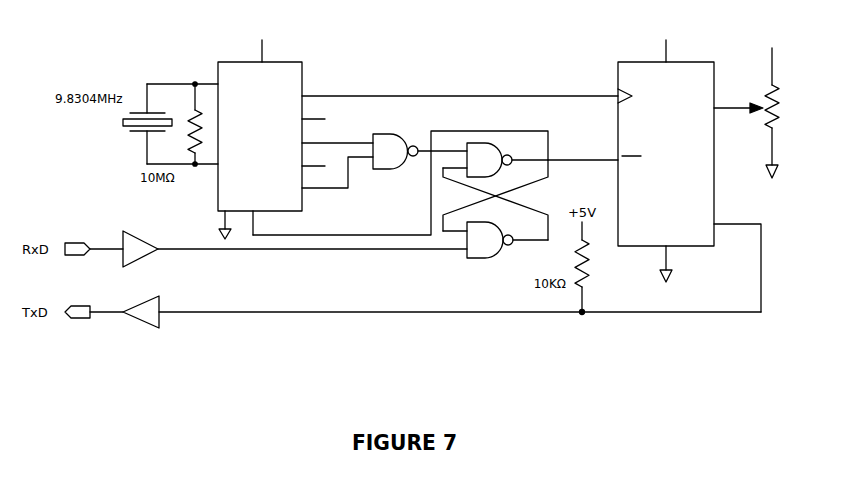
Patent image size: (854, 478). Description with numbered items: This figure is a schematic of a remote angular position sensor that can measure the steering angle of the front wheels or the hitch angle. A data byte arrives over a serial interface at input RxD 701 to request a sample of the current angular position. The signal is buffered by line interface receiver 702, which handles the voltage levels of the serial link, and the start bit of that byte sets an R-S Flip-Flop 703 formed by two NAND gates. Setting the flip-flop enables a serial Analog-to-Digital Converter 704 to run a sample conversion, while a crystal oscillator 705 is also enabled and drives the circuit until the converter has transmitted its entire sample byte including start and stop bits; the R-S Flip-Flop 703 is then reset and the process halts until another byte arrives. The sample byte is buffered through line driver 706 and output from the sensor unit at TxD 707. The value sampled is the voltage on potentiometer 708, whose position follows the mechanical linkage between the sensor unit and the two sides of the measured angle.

The input RxD 701 is at (80, 240).
The line interface receiver 702 is at (122, 233).
The R-S Flip-Flop 703 is at (455, 256).
The serial Analog-to-Digital Converter 704 is at (626, 60).
The crystal oscillator 705 is at (218, 59).
The line driver 706 is at (143, 329).
The TxD 707 is at (73, 321).
The potentiometer 708 is at (790, 95).